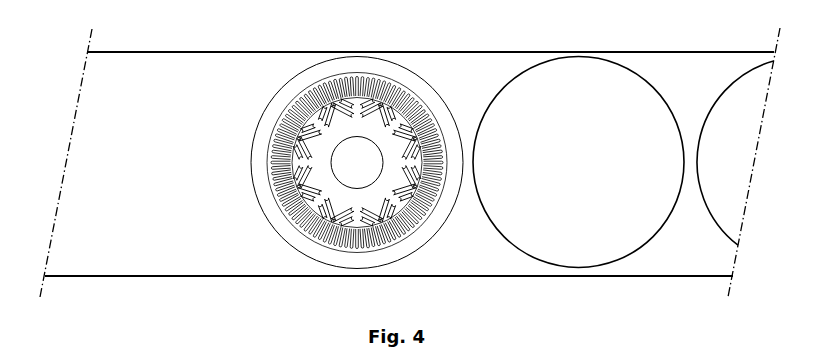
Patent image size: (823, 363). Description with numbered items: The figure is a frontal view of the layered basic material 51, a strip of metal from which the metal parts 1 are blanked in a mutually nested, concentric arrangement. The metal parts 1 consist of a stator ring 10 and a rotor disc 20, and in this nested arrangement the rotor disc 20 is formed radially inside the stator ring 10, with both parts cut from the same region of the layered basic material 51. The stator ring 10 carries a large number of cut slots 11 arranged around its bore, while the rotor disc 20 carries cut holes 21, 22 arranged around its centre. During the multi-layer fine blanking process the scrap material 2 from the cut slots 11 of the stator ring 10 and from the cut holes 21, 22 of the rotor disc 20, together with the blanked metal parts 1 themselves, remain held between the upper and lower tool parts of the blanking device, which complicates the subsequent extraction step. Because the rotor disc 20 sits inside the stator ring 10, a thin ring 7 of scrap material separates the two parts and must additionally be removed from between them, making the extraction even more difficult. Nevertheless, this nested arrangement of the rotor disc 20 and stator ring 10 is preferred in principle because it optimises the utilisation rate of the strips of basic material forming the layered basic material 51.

The layered basic material 51 is at (125, 87).
The metal parts 1 is at (306, 163).
The stator ring 10 is at (373, 162).
The rotor disc 20 is at (272, 154).
The thin ring 7 is at (410, 118).
The scrap material 2 is at (271, 166).
The cut slots 11 is at (264, 186).
The cut holes 21 is at (316, 193).
The cut holes 22 is at (353, 163).